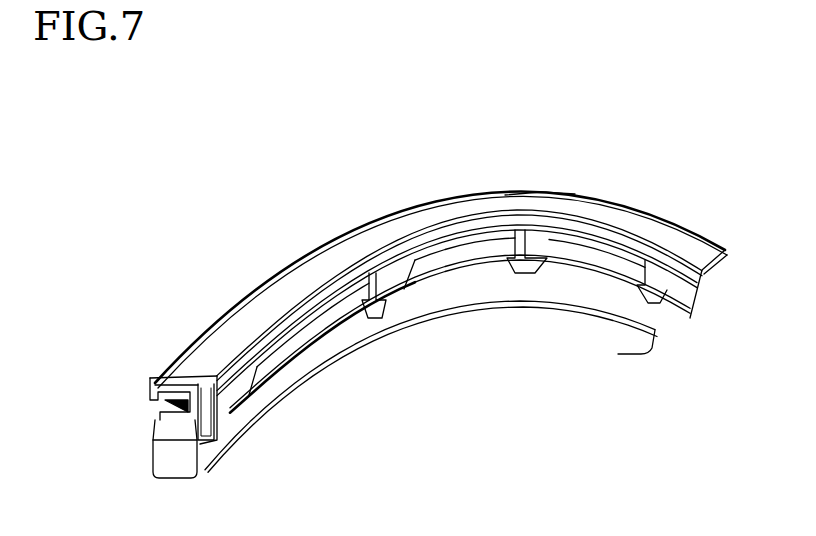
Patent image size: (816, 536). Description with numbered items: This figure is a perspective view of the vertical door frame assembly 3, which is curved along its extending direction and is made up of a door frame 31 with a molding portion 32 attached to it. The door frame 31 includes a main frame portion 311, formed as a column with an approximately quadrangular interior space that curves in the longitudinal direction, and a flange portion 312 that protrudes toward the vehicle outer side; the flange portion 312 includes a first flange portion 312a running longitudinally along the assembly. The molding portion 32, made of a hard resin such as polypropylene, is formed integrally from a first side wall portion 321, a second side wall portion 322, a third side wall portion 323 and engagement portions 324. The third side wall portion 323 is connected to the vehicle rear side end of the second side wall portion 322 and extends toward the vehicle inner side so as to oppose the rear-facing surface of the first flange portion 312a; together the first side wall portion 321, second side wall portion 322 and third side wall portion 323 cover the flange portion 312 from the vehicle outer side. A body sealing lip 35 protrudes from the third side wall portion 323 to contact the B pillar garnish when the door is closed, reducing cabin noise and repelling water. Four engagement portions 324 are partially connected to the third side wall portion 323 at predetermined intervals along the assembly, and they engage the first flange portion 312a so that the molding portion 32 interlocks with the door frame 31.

The vertical door frame assembly 3 is at (418, 331).
The door frame 31 is at (369, 389).
The main frame portion 311 is at (175, 482).
The flange portion 312 is at (427, 361).
The first flange portion 312a is at (333, 322).
The molding portion 32 is at (452, 318).
The first side wall portion 321 is at (168, 400).
The second side wall portion 322 is at (212, 342).
The third side wall portion 323 is at (597, 230).
The engagement portion 324 is at (253, 400).
The body sealing lip 35 is at (512, 205).